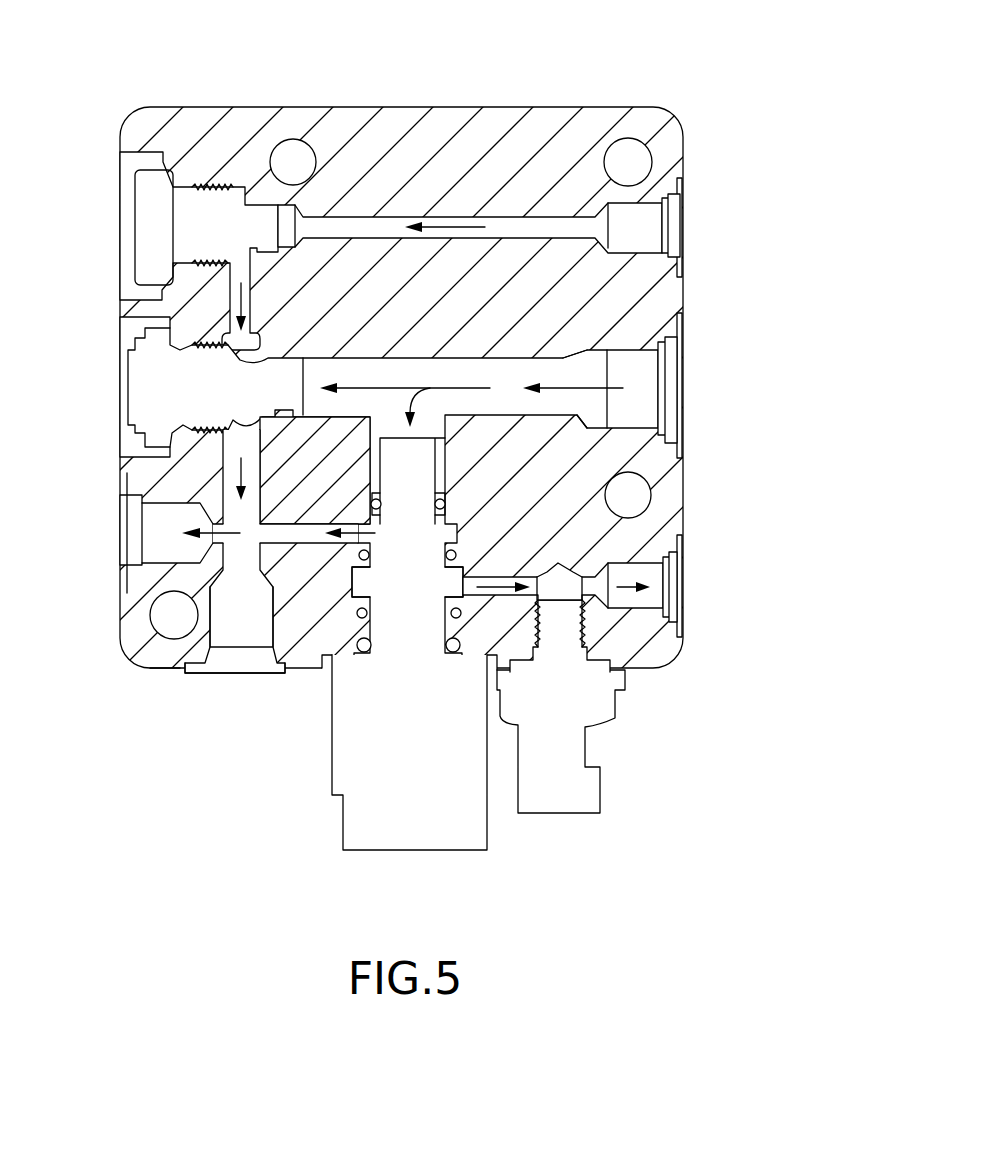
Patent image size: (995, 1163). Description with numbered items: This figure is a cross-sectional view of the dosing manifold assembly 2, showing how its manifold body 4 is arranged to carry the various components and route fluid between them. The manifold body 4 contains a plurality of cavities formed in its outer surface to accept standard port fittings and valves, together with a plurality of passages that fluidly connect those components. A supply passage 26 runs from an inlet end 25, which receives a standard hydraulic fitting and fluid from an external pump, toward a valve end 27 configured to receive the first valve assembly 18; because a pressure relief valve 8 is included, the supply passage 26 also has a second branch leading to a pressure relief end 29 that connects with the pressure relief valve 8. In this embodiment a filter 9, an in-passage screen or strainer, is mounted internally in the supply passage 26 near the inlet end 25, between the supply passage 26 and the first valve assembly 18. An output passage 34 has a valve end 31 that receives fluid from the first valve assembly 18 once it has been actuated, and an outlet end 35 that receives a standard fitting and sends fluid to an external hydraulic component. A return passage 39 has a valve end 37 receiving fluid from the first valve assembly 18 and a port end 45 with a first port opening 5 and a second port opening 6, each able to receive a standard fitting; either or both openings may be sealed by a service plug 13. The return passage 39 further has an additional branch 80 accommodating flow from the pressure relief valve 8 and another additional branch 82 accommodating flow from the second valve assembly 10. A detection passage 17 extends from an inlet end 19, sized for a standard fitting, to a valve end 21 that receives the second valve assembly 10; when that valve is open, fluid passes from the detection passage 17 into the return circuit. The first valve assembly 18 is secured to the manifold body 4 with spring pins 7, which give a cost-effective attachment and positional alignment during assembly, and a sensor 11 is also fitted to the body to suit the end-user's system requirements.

The dosing manifold assembly 2 is at (727, 84).
The manifold body 4 is at (455, 105).
The first port opening 5 is at (127, 503).
The second port opening 6 is at (180, 668).
The spring pins 7 is at (350, 652).
The pressure relief valve 8 is at (128, 383).
The filter 9 is at (595, 357).
The second valve assembly 10 is at (147, 214).
The sensor 11 is at (602, 791).
The service plug 13 is at (240, 665).
The detection passage 17 is at (383, 216).
The first valve assembly 18 is at (487, 835).
The inlet end 19 is at (640, 226).
The valve end 21 is at (290, 212).
The inlet end 25 is at (645, 360).
The supply passage 26 is at (533, 380).
The valve end 27 is at (428, 436).
The pressure relief end 29 is at (338, 362).
The valve end 31 is at (466, 584).
The output passage 34 is at (525, 577).
The outlet end 35 is at (638, 600).
The valve end 37 is at (357, 532).
The return passage 39 is at (150, 543).
The port end 45 is at (243, 540).
The additional branch 80 is at (230, 458).
The additional branch 82 is at (228, 302).